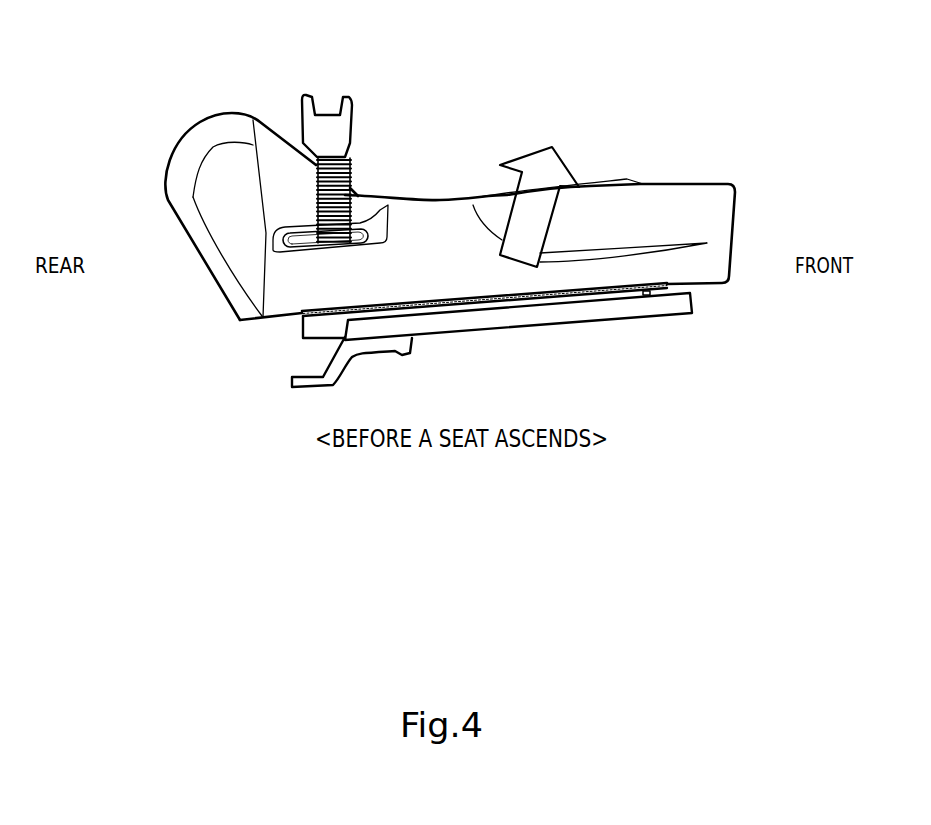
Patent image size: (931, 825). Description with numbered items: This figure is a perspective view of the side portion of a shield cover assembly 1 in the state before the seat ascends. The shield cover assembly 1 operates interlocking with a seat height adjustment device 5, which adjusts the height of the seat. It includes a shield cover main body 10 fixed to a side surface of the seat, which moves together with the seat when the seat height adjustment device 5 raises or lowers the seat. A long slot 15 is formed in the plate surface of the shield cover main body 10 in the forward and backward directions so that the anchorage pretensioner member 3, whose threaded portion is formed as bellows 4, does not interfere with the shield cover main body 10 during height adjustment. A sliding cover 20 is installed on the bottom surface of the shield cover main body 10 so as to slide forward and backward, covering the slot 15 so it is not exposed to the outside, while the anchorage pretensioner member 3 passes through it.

The shield cover assembly 1 is at (228, 86).
The anchorage pretensioner member 3 is at (343, 123).
The bellows 4 is at (347, 185).
The seat height adjustment device 5 is at (260, 363).
The shield cover main body 10 is at (193, 195).
The slot 15 is at (365, 240).
The sliding cover 20 is at (280, 238).